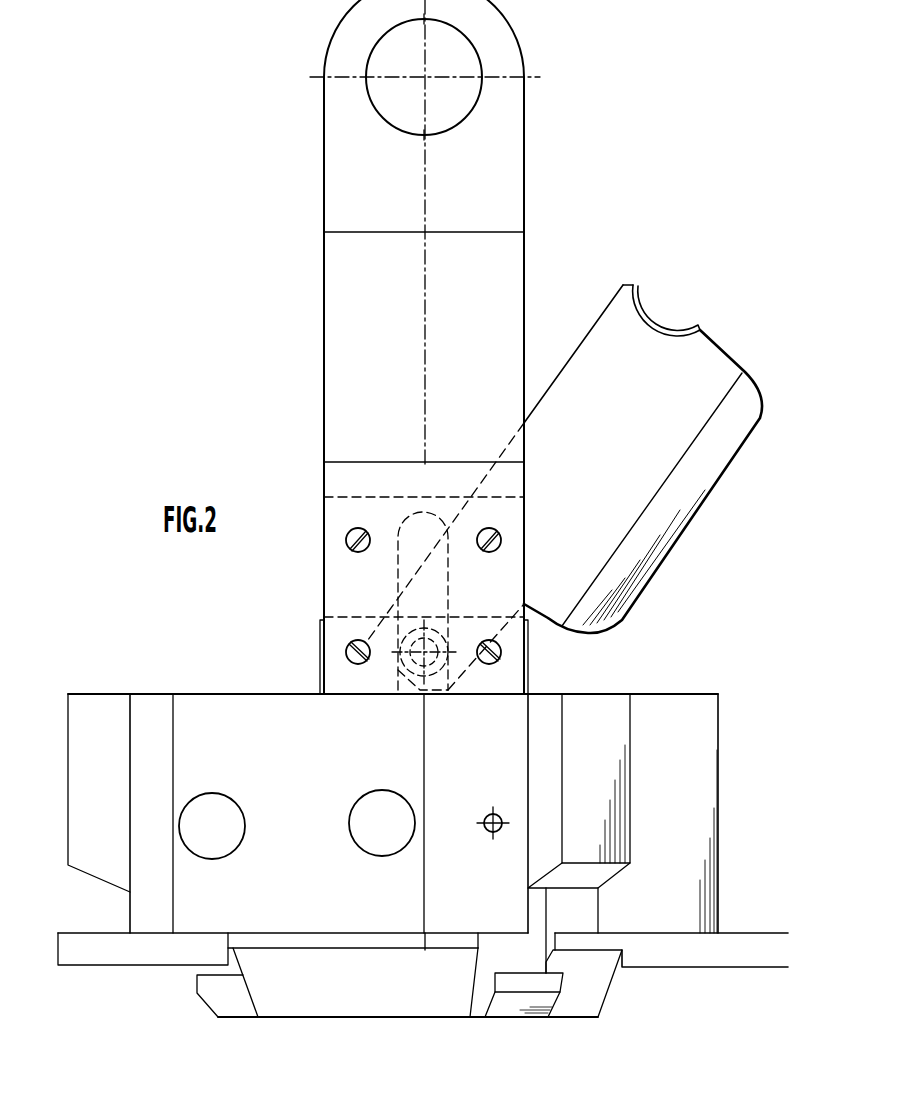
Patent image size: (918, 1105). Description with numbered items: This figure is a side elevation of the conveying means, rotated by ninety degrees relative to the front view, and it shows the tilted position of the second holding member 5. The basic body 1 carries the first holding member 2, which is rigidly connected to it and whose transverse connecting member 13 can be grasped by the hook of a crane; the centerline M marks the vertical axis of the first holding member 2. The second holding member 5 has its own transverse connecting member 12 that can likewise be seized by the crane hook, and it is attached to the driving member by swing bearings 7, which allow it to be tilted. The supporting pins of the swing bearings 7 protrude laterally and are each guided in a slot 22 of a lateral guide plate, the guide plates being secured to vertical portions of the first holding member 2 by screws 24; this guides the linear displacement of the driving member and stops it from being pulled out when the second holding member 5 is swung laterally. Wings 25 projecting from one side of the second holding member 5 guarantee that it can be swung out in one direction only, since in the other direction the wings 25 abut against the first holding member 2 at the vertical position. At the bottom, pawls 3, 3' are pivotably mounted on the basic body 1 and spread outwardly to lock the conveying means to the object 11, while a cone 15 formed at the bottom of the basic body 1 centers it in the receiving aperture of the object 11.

The basic body 1 is at (204, 686).
The first holding member 2 is at (304, 298).
The pawl 3 is at (148, 873).
The pawl 3' is at (557, 855).
The second holding member 5 is at (600, 338).
The swing bearing 7 is at (418, 648).
The object 11 is at (705, 956).
The transverse connecting member 12 is at (656, 320).
The transverse connecting member 13 is at (466, 95).
The cone 15 is at (363, 1005).
The slot 22 is at (400, 538).
The screw 24 is at (346, 537).
The wing 25 is at (683, 515).
The center line M is at (428, 378).